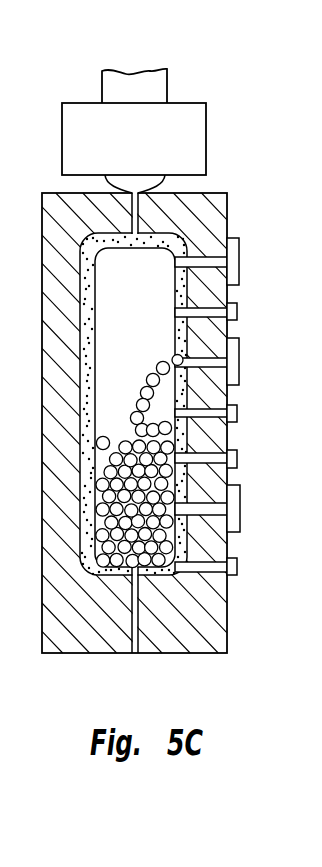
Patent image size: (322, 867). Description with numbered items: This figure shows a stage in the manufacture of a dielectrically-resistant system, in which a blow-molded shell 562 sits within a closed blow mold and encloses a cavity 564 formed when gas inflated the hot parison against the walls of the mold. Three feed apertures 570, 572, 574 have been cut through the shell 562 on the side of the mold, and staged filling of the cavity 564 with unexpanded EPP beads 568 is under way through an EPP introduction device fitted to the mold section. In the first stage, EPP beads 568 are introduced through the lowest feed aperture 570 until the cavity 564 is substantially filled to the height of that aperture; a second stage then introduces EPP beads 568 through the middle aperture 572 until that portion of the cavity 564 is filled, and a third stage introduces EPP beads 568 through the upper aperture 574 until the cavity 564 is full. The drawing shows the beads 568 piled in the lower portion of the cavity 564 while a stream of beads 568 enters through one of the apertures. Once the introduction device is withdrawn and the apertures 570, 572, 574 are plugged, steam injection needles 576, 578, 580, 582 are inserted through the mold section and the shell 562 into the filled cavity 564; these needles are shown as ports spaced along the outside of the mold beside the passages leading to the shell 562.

The shell 562 is at (163, 239).
The cavity 564 is at (145, 257).
The unexpanded EPP beads 568 is at (177, 468).
The feed aperture 570 is at (177, 505).
The feed aperture 572 is at (183, 361).
The feed aperture 574 is at (177, 261).
The steam injection needle 576 is at (262, 560).
The steam injection needle 578 is at (265, 449).
The steam injection needle 580 is at (262, 404).
The steam injection needle 582 is at (237, 310).